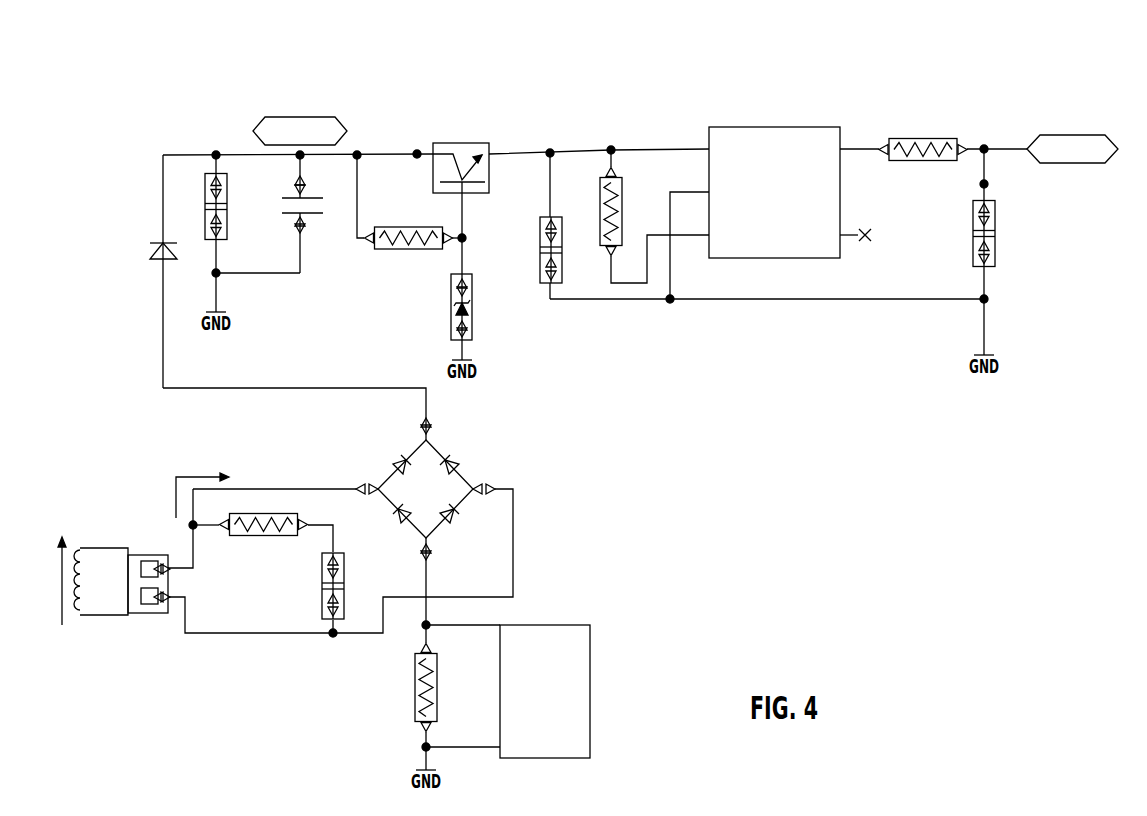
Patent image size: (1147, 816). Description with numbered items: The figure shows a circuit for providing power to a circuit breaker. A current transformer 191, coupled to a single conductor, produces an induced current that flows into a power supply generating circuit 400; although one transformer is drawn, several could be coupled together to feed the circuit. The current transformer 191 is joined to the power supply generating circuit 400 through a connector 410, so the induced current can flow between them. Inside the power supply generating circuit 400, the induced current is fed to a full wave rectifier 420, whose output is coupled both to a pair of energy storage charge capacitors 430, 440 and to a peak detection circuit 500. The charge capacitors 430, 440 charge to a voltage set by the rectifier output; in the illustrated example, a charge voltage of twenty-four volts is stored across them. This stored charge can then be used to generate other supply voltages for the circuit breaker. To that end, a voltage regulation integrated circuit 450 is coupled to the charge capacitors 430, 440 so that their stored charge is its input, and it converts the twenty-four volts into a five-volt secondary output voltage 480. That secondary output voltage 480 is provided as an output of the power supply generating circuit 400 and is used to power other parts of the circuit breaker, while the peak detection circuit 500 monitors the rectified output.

The power supply generating circuit 400 is at (600, 79).
The connector 410 is at (150, 556).
The full wave rectifier 420 is at (468, 478).
The charge capacitor 430 is at (316, 199).
The charge capacitor 440 is at (226, 237).
The voltage regulation integrated circuit 450 is at (725, 127).
The secondary output voltage 480 is at (1053, 163).
The peak detection circuit 500 is at (590, 680).
The current transformer 191 is at (125, 615).